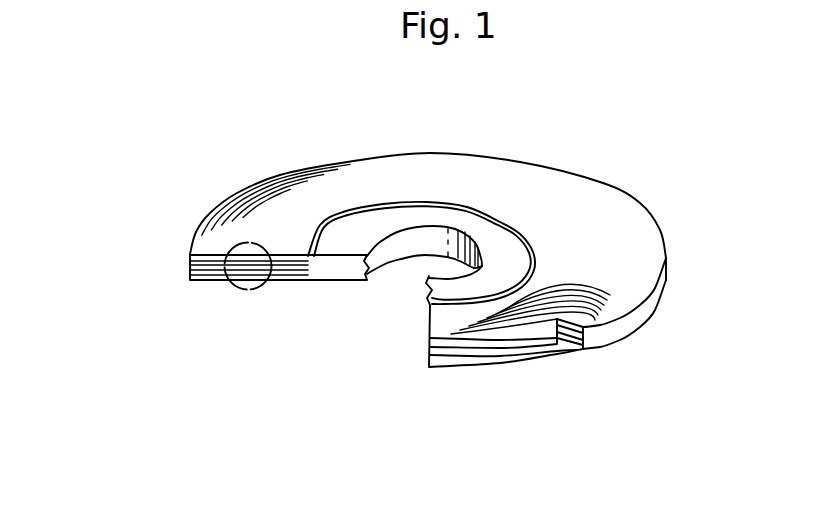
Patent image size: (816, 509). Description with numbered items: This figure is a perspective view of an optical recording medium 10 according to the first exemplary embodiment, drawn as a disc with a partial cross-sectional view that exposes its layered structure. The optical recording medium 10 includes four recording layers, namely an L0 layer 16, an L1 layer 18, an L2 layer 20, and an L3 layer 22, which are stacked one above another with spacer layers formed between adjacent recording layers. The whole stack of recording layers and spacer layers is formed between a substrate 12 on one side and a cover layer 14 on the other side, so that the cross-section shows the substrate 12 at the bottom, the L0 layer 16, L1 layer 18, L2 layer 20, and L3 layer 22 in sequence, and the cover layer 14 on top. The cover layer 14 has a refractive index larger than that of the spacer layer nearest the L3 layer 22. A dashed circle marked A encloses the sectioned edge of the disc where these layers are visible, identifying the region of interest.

The optical recording medium 10 is at (510, 154).
The substrate 12 is at (293, 281).
The cover layer 14 is at (196, 254).
The L0 layer 16 is at (190, 278).
The L1 layer 18 is at (190, 271).
The L2 layer 20 is at (190, 265).
The L3 layer 22 is at (191, 258).
The detail region A is at (242, 290).